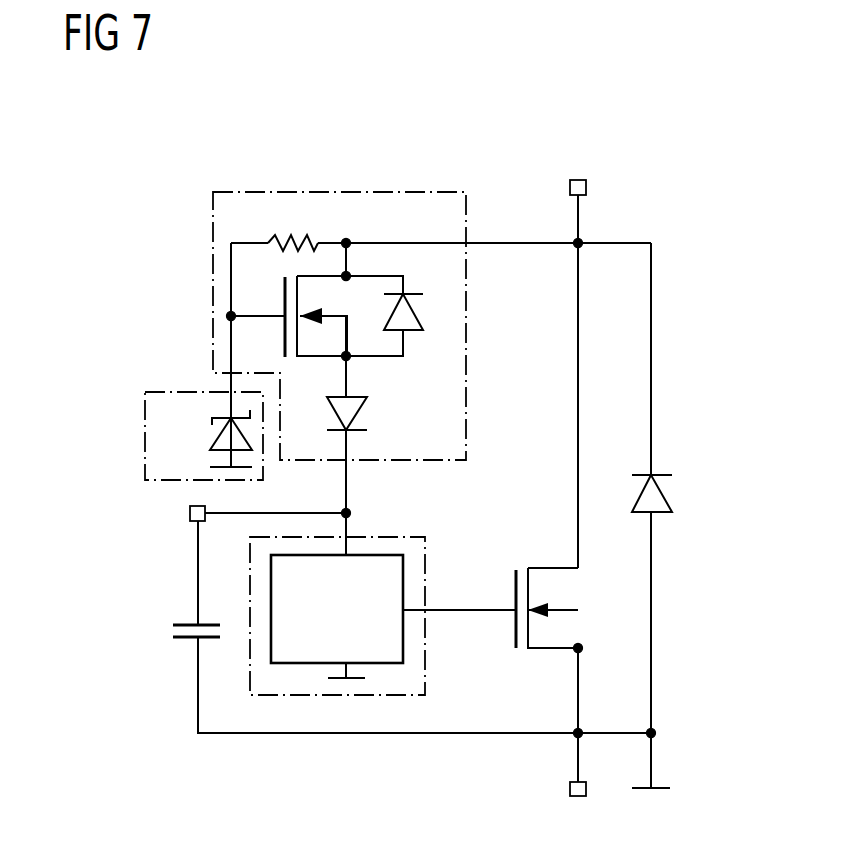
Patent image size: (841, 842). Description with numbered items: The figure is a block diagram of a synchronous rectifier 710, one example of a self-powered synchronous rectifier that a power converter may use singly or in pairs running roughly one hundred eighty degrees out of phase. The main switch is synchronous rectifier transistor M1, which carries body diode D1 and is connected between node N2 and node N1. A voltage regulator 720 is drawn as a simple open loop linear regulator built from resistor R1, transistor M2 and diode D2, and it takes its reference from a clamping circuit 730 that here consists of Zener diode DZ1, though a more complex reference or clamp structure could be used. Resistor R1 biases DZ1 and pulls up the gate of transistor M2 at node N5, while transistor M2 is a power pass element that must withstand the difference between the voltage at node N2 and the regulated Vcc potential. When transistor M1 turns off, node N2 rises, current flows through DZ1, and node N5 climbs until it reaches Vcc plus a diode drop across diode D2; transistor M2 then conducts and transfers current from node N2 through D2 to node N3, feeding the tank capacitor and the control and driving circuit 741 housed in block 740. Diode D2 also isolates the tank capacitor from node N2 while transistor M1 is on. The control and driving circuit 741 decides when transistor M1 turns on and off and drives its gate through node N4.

The synchronous rectifier 710 is at (148, 168).
The voltage regulator 720 is at (213, 246).
The clamping circuit 730 is at (145, 443).
The control and driving block 740 is at (427, 665).
The control and driving circuit 741 is at (405, 620).
The resistor R1 is at (293, 226).
The transistor M2 is at (342, 300).
The diode D2 is at (367, 412).
The Zener diode DZ1 is at (205, 438).
The body diode D1 is at (673, 496).
The synchronous rectifier transistor M1 is at (563, 610).
The node N1 is at (573, 737).
The node N2 is at (574, 240).
The node N3 is at (351, 514).
The node N4 is at (463, 607).
The node N5 is at (215, 317).